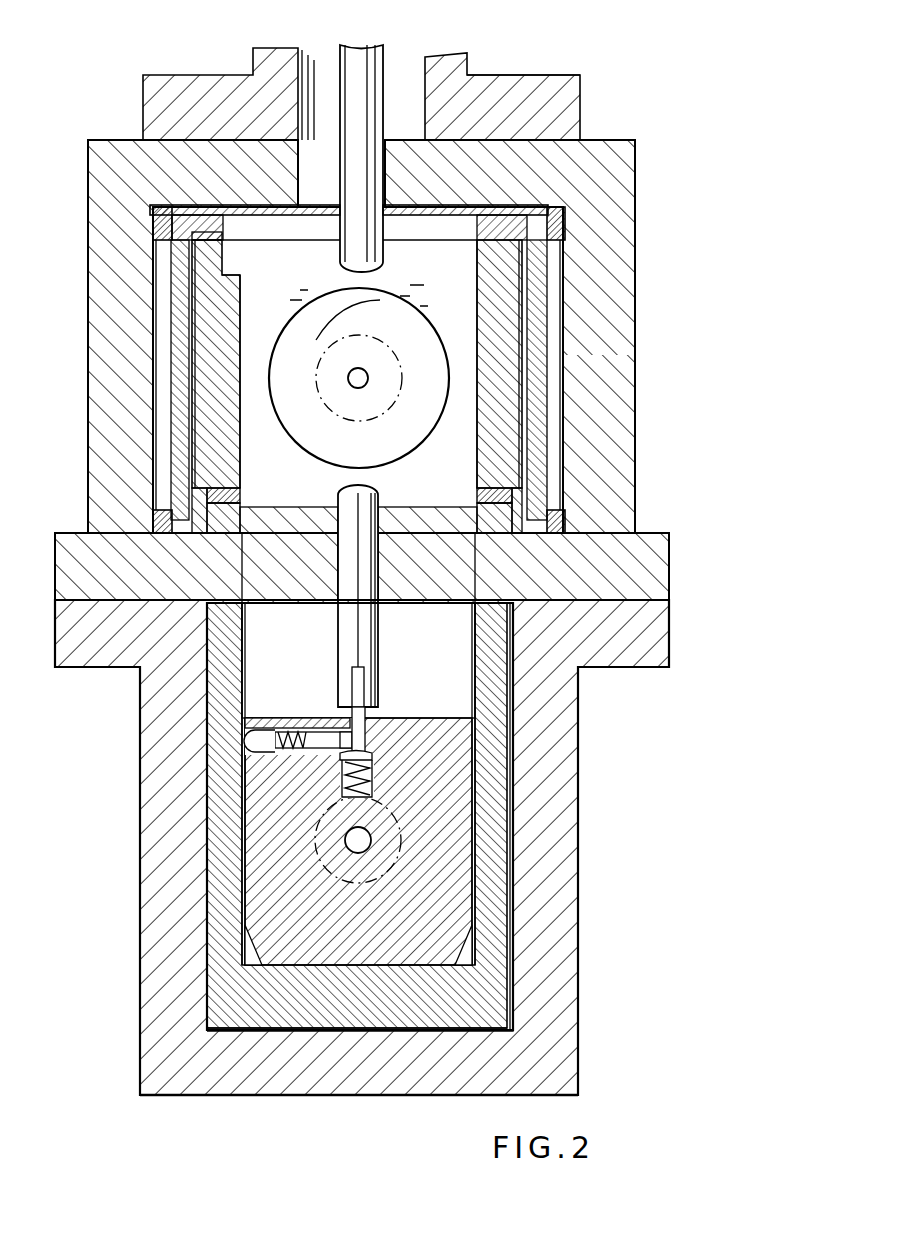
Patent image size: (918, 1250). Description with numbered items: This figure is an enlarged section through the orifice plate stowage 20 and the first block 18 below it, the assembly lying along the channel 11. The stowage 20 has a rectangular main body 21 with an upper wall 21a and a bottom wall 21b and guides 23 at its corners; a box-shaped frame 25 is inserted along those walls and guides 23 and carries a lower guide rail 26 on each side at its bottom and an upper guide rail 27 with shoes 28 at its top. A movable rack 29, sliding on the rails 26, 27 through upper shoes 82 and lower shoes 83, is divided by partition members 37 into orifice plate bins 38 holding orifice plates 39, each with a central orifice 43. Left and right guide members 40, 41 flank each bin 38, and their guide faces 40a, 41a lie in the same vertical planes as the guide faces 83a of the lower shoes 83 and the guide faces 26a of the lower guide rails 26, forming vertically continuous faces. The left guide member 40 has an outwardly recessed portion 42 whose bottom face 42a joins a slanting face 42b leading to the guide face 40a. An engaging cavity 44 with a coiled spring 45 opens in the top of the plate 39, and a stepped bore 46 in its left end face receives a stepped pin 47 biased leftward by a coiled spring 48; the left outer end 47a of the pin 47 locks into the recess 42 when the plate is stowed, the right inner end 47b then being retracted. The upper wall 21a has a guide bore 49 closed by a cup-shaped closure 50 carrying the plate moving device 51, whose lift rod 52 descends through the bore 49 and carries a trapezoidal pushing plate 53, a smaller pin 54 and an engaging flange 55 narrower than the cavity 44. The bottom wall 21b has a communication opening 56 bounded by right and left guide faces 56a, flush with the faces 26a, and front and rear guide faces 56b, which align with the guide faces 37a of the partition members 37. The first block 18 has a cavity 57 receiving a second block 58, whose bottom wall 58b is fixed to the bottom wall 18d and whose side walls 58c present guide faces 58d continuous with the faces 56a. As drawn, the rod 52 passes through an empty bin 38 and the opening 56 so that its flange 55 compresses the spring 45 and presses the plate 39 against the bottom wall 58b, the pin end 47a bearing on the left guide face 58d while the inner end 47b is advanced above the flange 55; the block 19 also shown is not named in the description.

The channel 11 is at (622, 92).
The first block 18 is at (155, 1020).
The bottom wall of the first block 18d is at (420, 1082).
The intermediate housing block 19 is at (632, 655).
The plate stowage 20 is at (636, 162).
The main body 21 is at (625, 190).
The upper wall 21a is at (440, 152).
The bottom wall 21b is at (570, 570).
The guides 23 is at (155, 222).
The frame 25 is at (546, 361).
The lower guide rail 26 is at (242, 522).
The guide face of the lower guide rail 26a is at (237, 522).
The upper guide rail 27 is at (228, 224).
The shoes 28 is at (212, 212).
The movable rack 29 is at (524, 401).
The partition members 37 is at (428, 312).
The guide face of the partition member 37a is at (410, 283).
The orifice plate bins 38 is at (466, 278).
The orifice plate 39 is at (285, 378).
The left guide member 40 is at (205, 352).
The guide face of the left guide member 40a is at (242, 440).
The right guide member 41 is at (500, 328).
The guide face of the right guide member 41a is at (478, 440).
The recessed portion 42 is at (207, 268).
The bottom face of the recessed portion 42a is at (236, 262).
The slanting face 42b is at (242, 282).
The orifice 43 is at (368, 378).
The engaging cavity 44 is at (374, 755).
The coiled spring 45 is at (375, 790).
The stepped bore 46 is at (310, 748).
The stepped pin 47 is at (300, 735).
The left outer end of the pin 47a is at (252, 732).
The right inner end of the pin 47b is at (345, 722).
The coiled spring 48 is at (285, 752).
The guide bore 49 is at (300, 158).
The cup-shaped closure 50 is at (178, 82).
The plate moving device 51 is at (388, 42).
The lift rod 52 is at (380, 648).
The pushing plate 53 is at (362, 685).
The pin 54 is at (366, 733).
The engaging flange 55 is at (372, 768).
The communication opening 56 is at (250, 580).
The right and left guide faces of the opening 56a is at (248, 560).
The front and rear guide faces of the opening 56b is at (408, 595).
The cavity 57 is at (512, 998).
The second block 58 is at (495, 955).
The bottom wall of the second block 58b is at (372, 1020).
The side walls of the second block 58c is at (222, 868).
The guide faces of the second block 58d is at (240, 800).
The upper shoes 82 is at (178, 256).
The lower shoes 83 is at (205, 490).
The guide faces of the lower shoes 83a is at (246, 496).